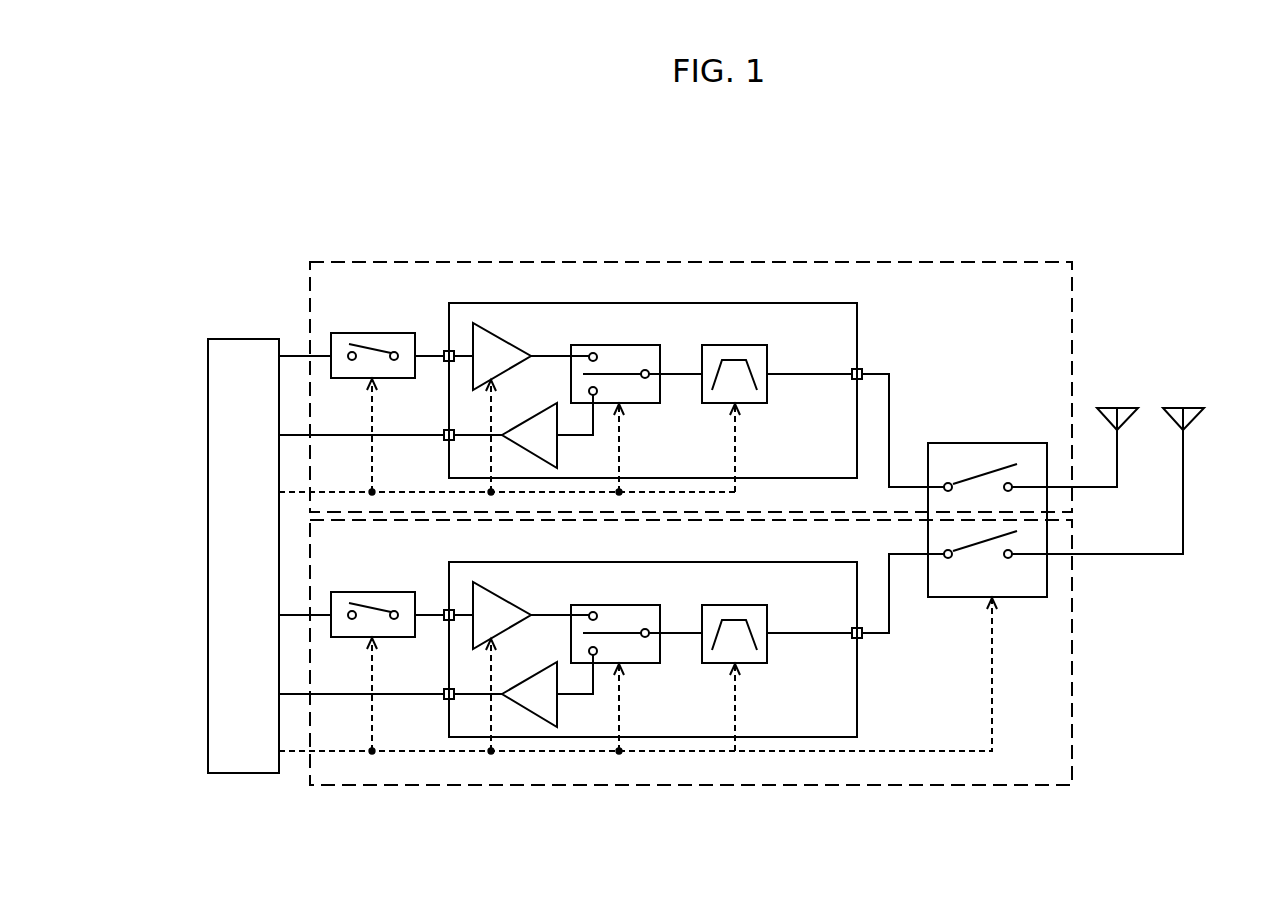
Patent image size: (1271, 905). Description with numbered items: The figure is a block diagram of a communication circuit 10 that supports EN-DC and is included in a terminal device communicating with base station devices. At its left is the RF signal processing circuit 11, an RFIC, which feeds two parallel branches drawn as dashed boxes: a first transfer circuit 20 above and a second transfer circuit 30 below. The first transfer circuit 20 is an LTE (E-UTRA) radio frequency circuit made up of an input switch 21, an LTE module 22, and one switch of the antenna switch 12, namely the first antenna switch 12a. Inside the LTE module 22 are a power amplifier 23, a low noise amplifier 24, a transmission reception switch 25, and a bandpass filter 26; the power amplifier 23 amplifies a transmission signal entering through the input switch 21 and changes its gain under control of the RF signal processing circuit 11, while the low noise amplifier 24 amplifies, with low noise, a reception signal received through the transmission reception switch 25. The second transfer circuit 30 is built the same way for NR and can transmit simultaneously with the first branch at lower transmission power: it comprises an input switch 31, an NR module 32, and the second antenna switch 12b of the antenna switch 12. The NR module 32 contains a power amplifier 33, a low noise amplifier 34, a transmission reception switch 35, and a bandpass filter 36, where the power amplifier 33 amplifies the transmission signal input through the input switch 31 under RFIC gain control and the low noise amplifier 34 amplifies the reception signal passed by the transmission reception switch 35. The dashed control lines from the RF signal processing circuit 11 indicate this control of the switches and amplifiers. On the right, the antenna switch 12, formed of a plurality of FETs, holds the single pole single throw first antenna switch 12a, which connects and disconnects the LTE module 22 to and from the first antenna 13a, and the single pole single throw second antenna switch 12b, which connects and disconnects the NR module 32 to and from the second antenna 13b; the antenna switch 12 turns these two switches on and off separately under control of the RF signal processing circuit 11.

The communication circuit 10 is at (1143, 235).
The RF signal processing circuit 11 is at (232, 339).
The antenna switch 12 is at (960, 443).
The first antenna switch 12a is at (982, 463).
The second antenna switch 12b is at (989, 564).
The first antenna 13a is at (1117, 408).
The second antenna 13b is at (1183, 408).
The first transfer circuit 20 is at (957, 262).
The input switch 21 is at (393, 333).
The LTE module 22 is at (820, 303).
The power amplifier 23 is at (502, 341).
The low noise amplifier 24 is at (555, 452).
The transmission reception switch 25 is at (625, 345).
The bandpass filter 26 is at (740, 345).
The second transfer circuit 30 is at (957, 785).
The input switch 31 is at (393, 592).
The NR module 32 is at (820, 562).
The power amplifier 33 is at (502, 600).
The low noise amplifier 34 is at (555, 714).
The transmission reception switch 35 is at (625, 605).
The bandpass filter 36 is at (740, 605).